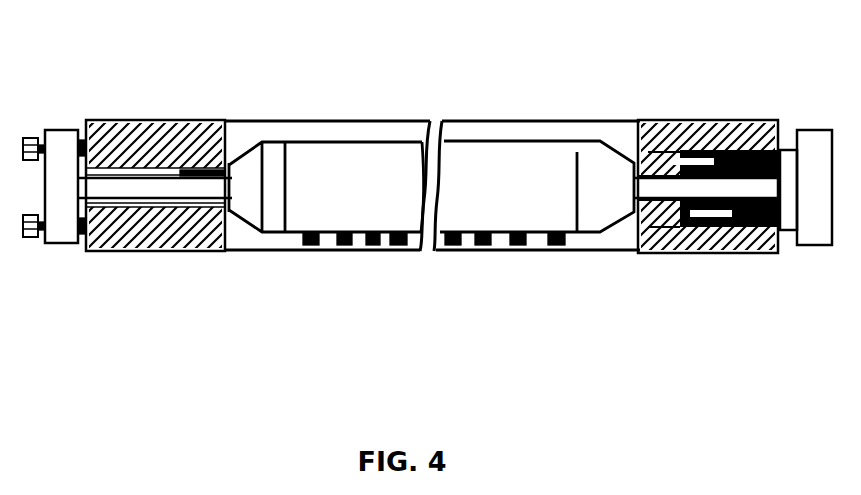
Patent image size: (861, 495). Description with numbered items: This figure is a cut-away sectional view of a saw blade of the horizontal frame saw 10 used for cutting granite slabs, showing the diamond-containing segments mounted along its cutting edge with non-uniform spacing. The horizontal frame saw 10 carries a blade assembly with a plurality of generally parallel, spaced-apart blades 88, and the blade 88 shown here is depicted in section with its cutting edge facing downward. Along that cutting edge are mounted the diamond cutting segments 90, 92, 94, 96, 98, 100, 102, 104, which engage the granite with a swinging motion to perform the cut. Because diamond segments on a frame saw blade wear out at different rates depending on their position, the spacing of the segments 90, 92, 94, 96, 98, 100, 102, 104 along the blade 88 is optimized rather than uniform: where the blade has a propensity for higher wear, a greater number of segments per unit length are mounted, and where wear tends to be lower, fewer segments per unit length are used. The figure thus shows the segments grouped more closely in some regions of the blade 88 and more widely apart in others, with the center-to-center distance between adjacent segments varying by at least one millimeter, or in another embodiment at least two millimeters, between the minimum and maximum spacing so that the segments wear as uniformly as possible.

The horizontal frame saw 10 is at (527, 106).
The blade 88 is at (537, 186).
The diamond cutting segment 90 is at (310, 246).
The diamond cutting segment 92 is at (343, 246).
The diamond cutting segment 94 is at (372, 246).
The diamond cutting segment 96 is at (402, 246).
The diamond cutting segment 98 is at (453, 246).
The diamond cutting segment 100 is at (482, 246).
The diamond cutting segment 102 is at (519, 246).
The diamond cutting segment 104 is at (558, 246).